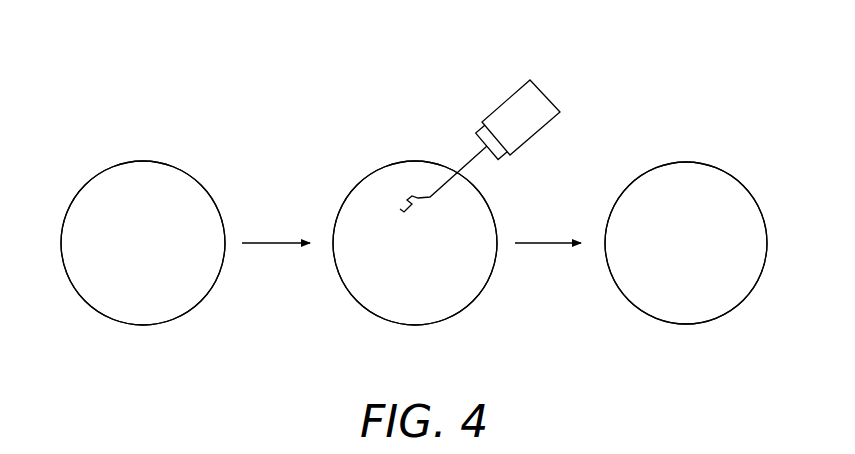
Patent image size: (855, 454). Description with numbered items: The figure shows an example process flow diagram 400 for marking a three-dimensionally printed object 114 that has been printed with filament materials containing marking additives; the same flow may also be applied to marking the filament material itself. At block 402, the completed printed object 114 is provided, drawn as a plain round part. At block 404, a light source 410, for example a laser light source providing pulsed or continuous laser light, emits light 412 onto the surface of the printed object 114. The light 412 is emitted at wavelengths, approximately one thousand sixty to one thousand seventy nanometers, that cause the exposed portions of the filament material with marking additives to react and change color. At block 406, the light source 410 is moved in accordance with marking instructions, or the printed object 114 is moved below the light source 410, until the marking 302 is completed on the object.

The process flow diagram 400 is at (170, 62).
The block 402 is at (104, 163).
The block 404 is at (376, 165).
The block 406 is at (651, 166).
The light source 410 is at (550, 92).
The light 412 is at (463, 163).
The 3D printed object 114 is at (104, 313).
The marking 302 is at (702, 195).